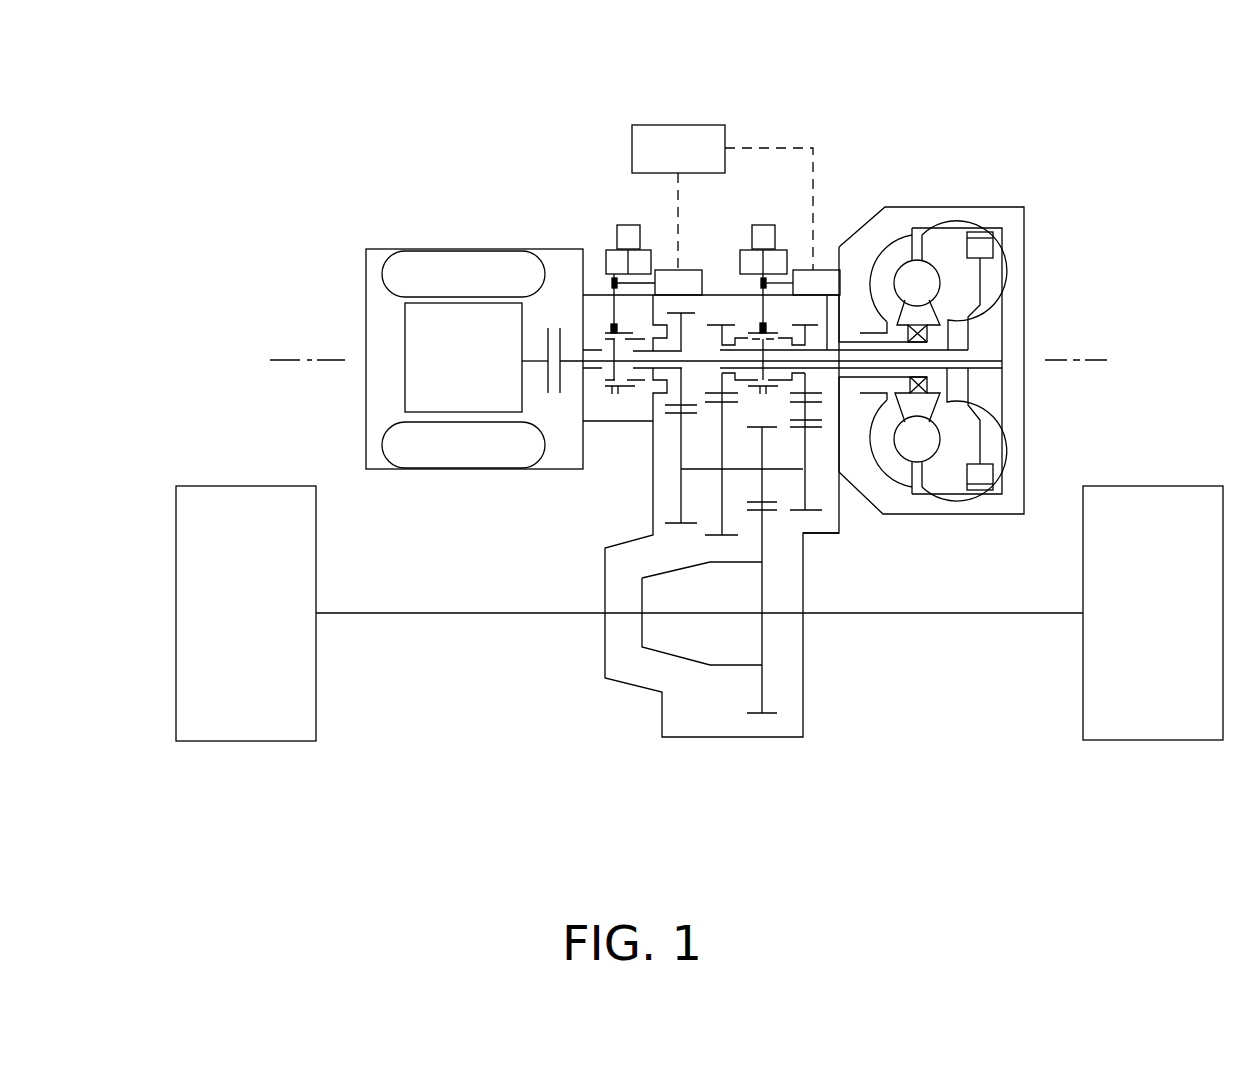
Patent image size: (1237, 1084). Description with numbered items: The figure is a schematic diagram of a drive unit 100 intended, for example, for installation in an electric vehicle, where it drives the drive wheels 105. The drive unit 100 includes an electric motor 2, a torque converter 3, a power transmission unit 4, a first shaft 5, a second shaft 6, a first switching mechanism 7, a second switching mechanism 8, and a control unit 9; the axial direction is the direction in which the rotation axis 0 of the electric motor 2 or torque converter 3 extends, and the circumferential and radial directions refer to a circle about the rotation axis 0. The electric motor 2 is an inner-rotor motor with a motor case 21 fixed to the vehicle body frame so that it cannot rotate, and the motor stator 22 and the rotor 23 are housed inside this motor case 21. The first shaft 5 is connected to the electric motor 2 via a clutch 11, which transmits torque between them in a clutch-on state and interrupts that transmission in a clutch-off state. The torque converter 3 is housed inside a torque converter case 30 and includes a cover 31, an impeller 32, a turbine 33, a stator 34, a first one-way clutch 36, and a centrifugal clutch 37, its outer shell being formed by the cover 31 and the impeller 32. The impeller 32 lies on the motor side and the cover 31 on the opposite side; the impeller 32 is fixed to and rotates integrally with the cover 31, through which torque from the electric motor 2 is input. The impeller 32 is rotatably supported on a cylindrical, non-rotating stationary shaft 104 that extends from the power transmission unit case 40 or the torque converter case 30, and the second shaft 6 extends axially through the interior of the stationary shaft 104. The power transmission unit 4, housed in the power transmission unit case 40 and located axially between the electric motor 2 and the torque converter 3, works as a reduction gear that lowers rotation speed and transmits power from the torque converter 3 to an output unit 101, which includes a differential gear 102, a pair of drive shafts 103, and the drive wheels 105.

The rotation axis 0 is at (689, 360).
The electric motor 2 is at (418, 310).
The torque converter 3 is at (979, 315).
The power transmission unit 4 is at (751, 383).
The first shaft 5 is at (578, 357).
The second shaft 6 is at (828, 350).
The first switching mechanism 7 is at (595, 297).
The second switching mechanism 8 is at (783, 295).
The control unit 9 is at (665, 123).
The clutch 11 is at (550, 338).
The motor case 21 is at (378, 249).
The motor stator 22 is at (458, 258).
The rotor 23 is at (412, 333).
The torque converter case 30 is at (990, 206).
The cover 31 is at (1002, 277).
The impeller 32 is at (897, 245).
The turbine 33 is at (953, 298).
The stator 34 is at (925, 318).
The first one-way clutch 36 is at (925, 383).
The centrifugal clutch 37 is at (988, 246).
The power transmission unit case 40 is at (838, 523).
The drive unit 100 is at (1098, 144).
The output unit 101 is at (847, 745).
The differential gear 102 is at (672, 637).
The drive shafts 103 is at (437, 613).
The stationary shaft 104 is at (857, 340).
The drive wheels 105 is at (250, 728).